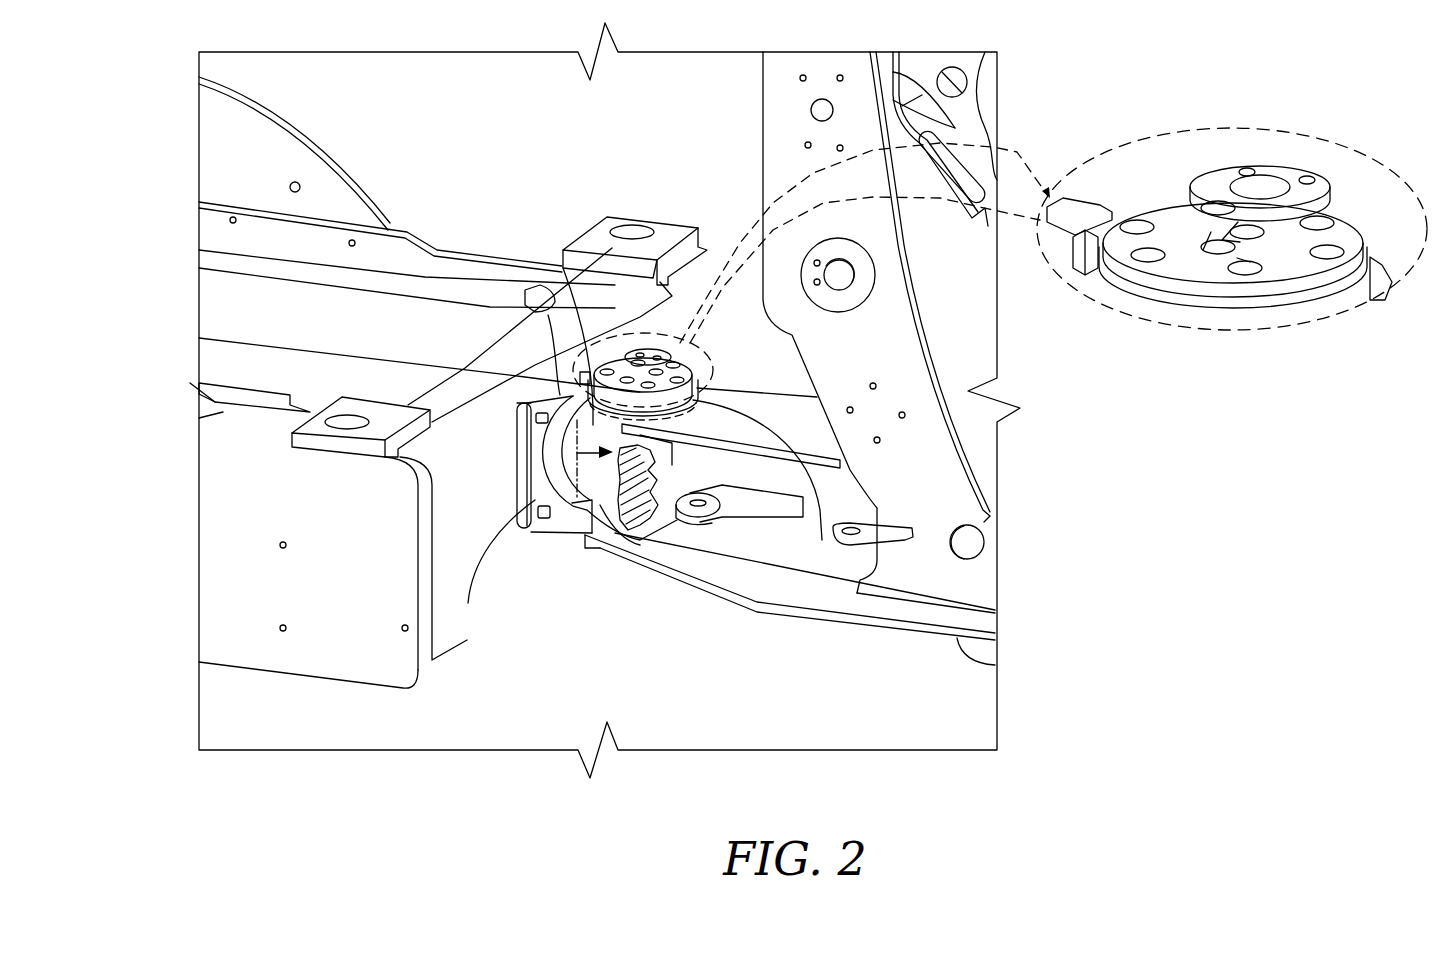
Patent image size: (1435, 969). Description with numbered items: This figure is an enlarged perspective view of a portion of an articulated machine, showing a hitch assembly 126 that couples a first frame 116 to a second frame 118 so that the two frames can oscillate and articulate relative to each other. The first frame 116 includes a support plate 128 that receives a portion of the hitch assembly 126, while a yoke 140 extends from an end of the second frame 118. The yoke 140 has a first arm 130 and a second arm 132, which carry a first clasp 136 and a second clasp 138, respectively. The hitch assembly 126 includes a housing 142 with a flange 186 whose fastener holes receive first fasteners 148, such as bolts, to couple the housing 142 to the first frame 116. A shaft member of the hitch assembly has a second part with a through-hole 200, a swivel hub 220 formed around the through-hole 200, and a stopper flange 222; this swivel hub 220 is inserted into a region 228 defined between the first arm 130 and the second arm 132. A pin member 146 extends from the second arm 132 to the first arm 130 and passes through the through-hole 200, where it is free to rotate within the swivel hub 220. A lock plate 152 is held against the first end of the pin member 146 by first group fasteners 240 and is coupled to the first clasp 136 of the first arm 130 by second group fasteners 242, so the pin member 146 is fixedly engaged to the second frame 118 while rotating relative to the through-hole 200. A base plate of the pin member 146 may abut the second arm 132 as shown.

The first frame 116 is at (250, 650).
The second frame 118 is at (995, 665).
The hitch assembly 126 is at (548, 540).
The support plate 128 is at (420, 573).
The first arm 130 is at (748, 390).
The second arm 132 is at (703, 588).
The first clasp 136 is at (822, 540).
The second clasp 138 is at (693, 467).
The yoke 140 is at (770, 386).
The housing 142 is at (540, 288).
The pin member 146 is at (640, 540).
The first fasteners 148 is at (517, 400).
The lock plate 152 is at (1280, 230).
The flange 186 is at (525, 290).
The through-hole 200 is at (600, 490).
The swivel hub 220 is at (723, 520).
The stopper flange 222 is at (548, 463).
The region 228 is at (525, 428).
The first group fasteners 240 is at (1247, 232).
The second group fasteners 242 is at (1137, 227).